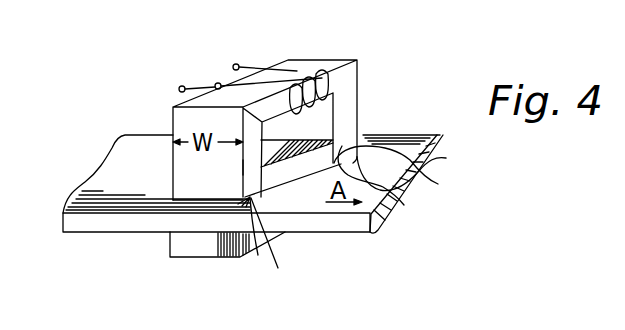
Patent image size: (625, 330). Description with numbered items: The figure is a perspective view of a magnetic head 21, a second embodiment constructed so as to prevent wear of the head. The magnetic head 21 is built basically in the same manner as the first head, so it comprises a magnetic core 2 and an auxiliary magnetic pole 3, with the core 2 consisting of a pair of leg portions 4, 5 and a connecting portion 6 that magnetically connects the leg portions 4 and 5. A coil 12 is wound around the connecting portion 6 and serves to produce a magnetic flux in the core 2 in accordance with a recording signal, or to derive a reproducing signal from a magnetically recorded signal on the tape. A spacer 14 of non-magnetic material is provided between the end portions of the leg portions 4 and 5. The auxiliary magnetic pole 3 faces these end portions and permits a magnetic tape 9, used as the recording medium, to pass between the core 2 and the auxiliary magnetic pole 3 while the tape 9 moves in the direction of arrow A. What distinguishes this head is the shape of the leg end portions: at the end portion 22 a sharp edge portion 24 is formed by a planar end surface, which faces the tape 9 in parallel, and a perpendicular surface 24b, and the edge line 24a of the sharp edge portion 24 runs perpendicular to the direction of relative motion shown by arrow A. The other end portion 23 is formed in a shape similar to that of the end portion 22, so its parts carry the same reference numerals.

The magnetic core 2 is at (357, 62).
The auxiliary magnetic pole 3 is at (190, 247).
The leg portion 4 is at (180, 115).
The leg portion 5 is at (352, 88).
The connecting portion 6 is at (320, 78).
The magnetic tape 9 is at (112, 220).
The coil 12 is at (240, 65).
The spacer 14 is at (293, 172).
The magnetic head 21 is at (191, 66).
The end portion 22 is at (258, 255).
The end portion 23 is at (416, 186).
The sharp edge portion 24 is at (400, 200).
The edge line 24a is at (438, 157).
The perpendicular surface 24b is at (350, 128).